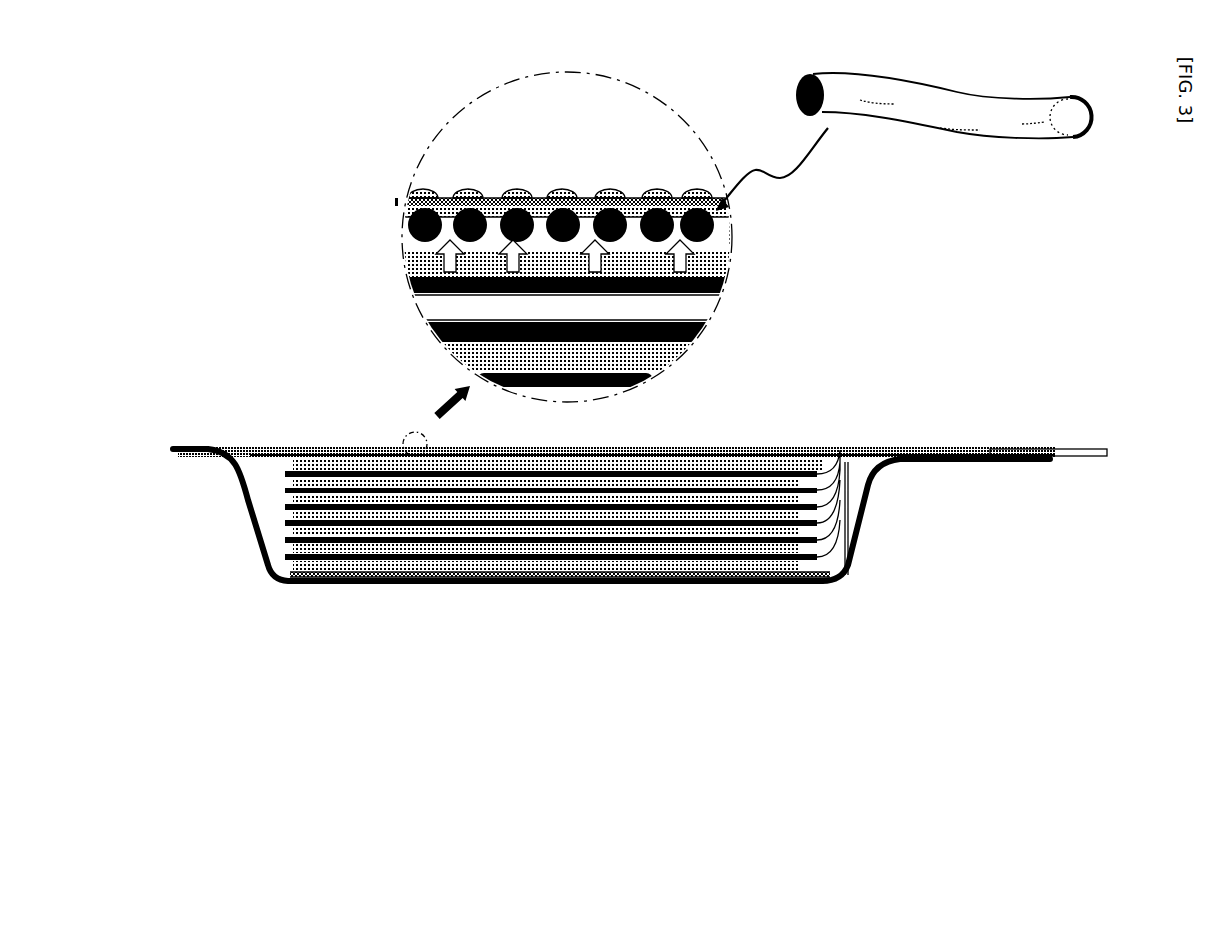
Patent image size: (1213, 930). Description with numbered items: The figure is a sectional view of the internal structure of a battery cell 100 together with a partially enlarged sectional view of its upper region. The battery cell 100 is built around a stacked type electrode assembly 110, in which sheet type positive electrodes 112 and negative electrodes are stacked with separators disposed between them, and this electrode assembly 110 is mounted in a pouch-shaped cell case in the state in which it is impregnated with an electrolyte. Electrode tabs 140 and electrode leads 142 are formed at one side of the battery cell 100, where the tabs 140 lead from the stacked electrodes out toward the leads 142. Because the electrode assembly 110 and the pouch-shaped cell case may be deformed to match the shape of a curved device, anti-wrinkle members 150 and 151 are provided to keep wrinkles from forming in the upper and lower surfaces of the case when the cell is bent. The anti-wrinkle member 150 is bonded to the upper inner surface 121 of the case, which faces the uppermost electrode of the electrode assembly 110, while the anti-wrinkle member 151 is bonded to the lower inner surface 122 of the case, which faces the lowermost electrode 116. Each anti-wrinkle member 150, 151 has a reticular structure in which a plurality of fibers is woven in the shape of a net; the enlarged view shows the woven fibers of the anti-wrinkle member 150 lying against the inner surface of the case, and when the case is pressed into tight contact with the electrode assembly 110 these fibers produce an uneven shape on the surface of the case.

The battery cell 100 is at (241, 148).
The stacked type electrode assembly 110 is at (262, 514).
The positive electrodes 112 is at (293, 532).
The lowermost electrode 116 is at (290, 590).
The upper inner surface 121 is at (388, 448).
The lower inner surface 122 is at (460, 583).
The electrode tabs 140 is at (860, 480).
The electrode leads 142 is at (1073, 450).
The anti-wrinkle member 150 is at (333, 453).
The anti-wrinkle member 151 is at (378, 585).